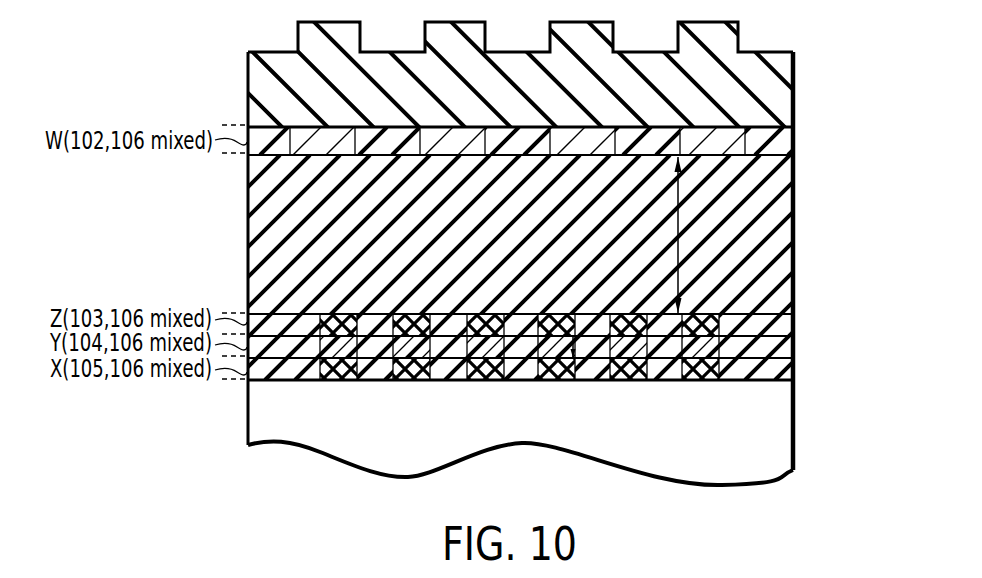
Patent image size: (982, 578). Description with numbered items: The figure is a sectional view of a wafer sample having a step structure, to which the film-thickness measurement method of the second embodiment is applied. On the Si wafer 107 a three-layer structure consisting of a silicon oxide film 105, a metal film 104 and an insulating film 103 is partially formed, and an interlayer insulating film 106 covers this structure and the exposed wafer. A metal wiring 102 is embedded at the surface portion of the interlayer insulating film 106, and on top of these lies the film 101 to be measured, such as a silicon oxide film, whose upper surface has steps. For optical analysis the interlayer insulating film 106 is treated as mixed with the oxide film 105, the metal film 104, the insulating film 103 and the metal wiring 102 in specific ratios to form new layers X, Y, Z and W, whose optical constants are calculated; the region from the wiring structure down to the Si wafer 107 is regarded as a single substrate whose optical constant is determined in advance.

The film to be measured 101 is at (773, 97).
The metal wiring 102 is at (713, 136).
The insulating film 103 is at (765, 305).
The metal film 104 is at (762, 341).
The silicon oxide film 105 is at (790, 391).
The interlayer insulating film 106 is at (780, 220).
The Si wafer 107 is at (778, 440).